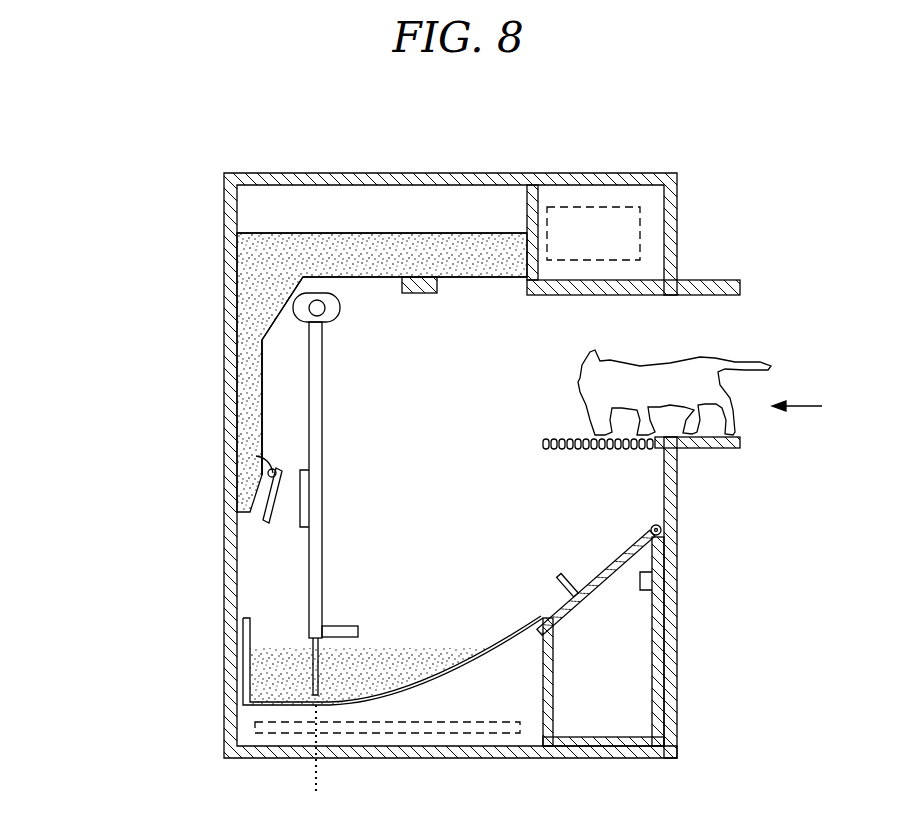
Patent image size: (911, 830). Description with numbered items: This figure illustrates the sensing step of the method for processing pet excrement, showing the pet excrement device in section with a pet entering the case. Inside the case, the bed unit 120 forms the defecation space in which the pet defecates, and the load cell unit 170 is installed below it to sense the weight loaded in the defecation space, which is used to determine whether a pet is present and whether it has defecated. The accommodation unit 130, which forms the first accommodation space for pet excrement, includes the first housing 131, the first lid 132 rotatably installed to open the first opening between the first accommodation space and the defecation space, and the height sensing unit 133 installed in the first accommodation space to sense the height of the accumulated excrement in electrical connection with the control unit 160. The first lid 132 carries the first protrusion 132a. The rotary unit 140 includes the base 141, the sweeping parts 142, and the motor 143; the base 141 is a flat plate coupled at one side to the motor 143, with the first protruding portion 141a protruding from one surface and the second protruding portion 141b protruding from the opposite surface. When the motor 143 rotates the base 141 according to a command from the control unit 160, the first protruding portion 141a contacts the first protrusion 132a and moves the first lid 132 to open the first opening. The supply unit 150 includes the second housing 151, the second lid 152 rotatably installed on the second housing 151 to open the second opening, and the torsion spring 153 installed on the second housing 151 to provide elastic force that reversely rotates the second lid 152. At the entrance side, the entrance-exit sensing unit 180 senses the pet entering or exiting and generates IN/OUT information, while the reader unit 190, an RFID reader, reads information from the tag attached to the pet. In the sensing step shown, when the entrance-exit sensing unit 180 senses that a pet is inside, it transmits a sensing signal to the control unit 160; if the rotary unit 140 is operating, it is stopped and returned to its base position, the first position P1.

The bed unit 120 is at (247, 717).
The accommodation unit 130 is at (671, 591).
The first housing 131 is at (677, 640).
The first lid 132 is at (638, 573).
The first protrusion 132a is at (570, 567).
The height sensing unit 133 is at (677, 601).
The rotary unit 140 is at (189, 494).
The base 141 is at (318, 548).
The first protruding portion 141a is at (350, 628).
The second protruding portion 141b is at (298, 527).
The sweeping parts 142 is at (201, 666).
The motor 143 is at (303, 304).
The supply unit 150 is at (183, 431).
The second housing 151 is at (243, 400).
The second lid 152 is at (212, 481).
The torsion spring 153 is at (270, 470).
The control unit 160 is at (598, 207).
The load cell unit 170 is at (443, 730).
The entrance-exit sensing unit 180 is at (420, 277).
The reader unit 190 is at (728, 428).
The first position P1 is at (318, 765).